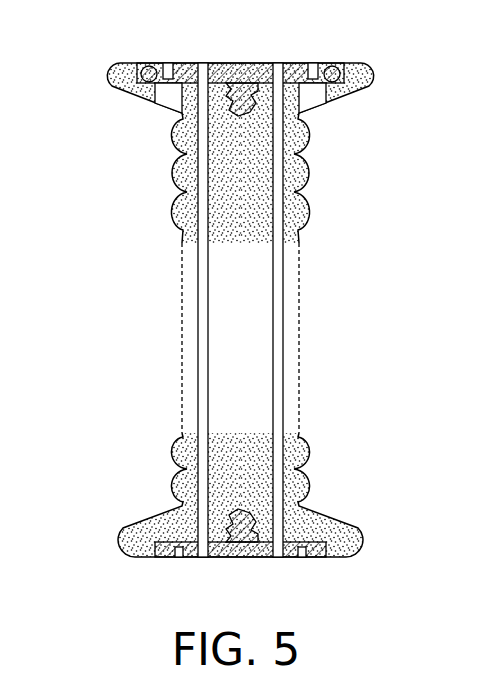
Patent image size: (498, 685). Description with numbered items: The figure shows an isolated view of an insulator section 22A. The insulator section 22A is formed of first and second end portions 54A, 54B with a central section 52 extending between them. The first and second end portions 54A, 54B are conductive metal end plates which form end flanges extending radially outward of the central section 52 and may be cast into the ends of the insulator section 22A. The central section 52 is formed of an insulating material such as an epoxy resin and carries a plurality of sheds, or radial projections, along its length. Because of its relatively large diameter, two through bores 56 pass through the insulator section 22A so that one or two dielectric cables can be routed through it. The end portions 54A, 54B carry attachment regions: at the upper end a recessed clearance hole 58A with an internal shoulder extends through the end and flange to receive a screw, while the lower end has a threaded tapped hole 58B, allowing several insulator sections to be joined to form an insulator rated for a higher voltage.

The insulator section 22A is at (204, 313).
The central section 52 is at (182, 113).
The first end portion 54A is at (155, 63).
The second end portion 54B is at (152, 558).
The through bores 56 is at (203, 63).
The clearance hole 58A is at (312, 100).
The threaded tapped hole 58B is at (178, 558).